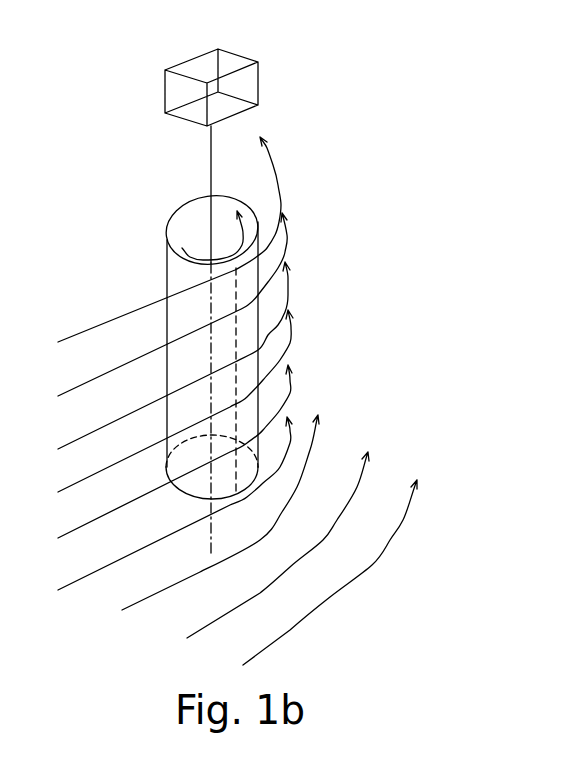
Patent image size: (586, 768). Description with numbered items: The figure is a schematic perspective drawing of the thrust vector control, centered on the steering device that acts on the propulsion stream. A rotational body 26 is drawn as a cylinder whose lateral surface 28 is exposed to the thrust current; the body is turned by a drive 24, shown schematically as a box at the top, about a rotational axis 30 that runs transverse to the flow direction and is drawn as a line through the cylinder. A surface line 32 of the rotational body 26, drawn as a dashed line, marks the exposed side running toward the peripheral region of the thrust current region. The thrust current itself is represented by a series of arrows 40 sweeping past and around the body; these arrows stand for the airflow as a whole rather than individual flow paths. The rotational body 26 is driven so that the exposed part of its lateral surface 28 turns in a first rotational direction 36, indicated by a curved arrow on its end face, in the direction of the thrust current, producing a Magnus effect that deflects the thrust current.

The drive 24 is at (260, 80).
The rotational axis 30 is at (212, 147).
The rotational body 26 is at (182, 199).
The lateral surface 28 is at (167, 280).
The first rotational direction 36 is at (207, 257).
The surface line 32 is at (237, 277).
The arrows 40 is at (372, 565).